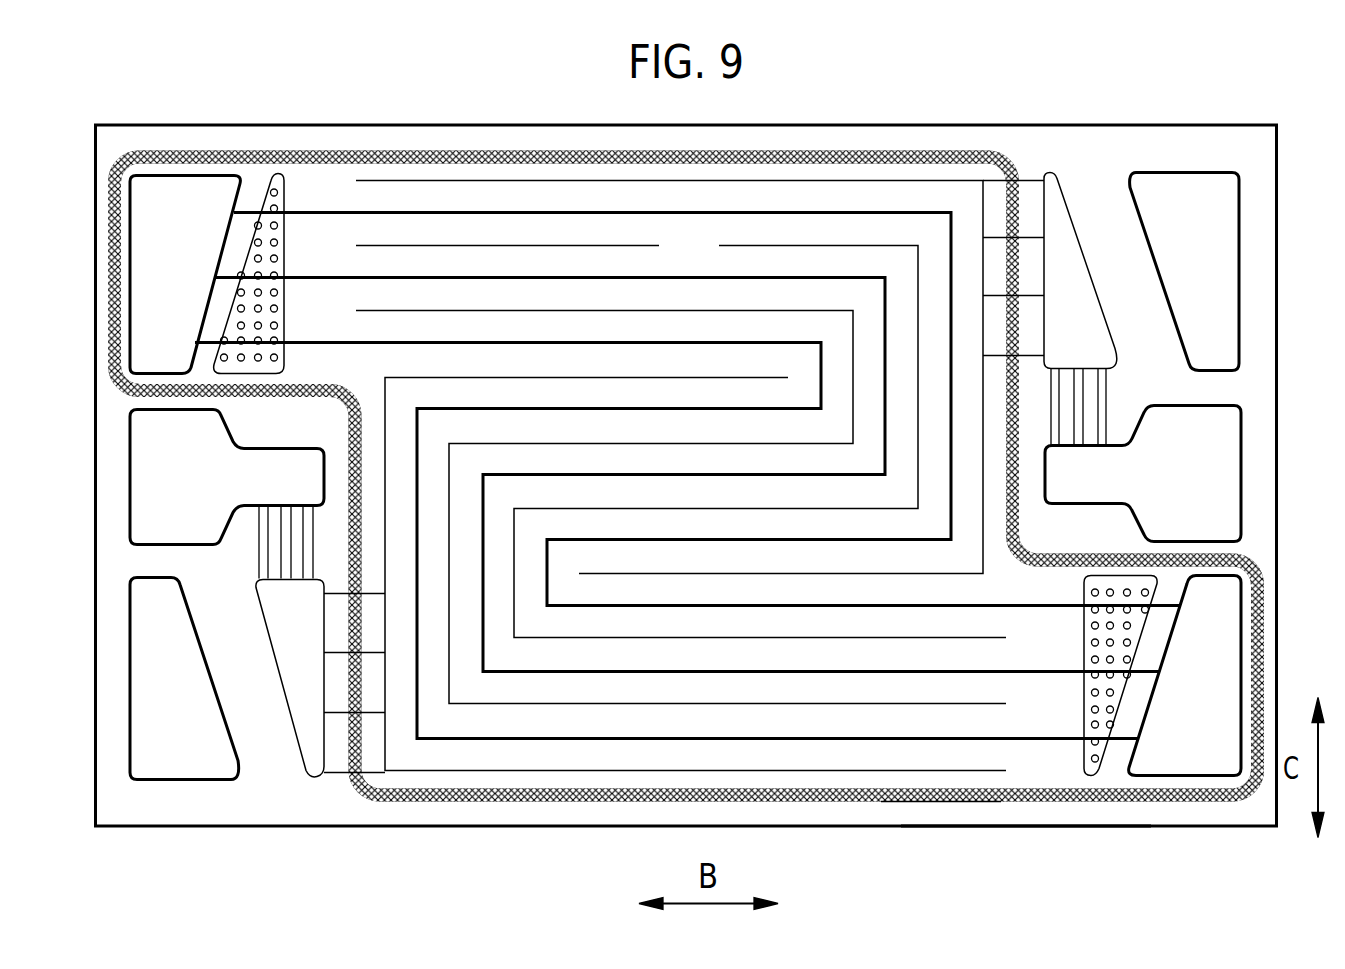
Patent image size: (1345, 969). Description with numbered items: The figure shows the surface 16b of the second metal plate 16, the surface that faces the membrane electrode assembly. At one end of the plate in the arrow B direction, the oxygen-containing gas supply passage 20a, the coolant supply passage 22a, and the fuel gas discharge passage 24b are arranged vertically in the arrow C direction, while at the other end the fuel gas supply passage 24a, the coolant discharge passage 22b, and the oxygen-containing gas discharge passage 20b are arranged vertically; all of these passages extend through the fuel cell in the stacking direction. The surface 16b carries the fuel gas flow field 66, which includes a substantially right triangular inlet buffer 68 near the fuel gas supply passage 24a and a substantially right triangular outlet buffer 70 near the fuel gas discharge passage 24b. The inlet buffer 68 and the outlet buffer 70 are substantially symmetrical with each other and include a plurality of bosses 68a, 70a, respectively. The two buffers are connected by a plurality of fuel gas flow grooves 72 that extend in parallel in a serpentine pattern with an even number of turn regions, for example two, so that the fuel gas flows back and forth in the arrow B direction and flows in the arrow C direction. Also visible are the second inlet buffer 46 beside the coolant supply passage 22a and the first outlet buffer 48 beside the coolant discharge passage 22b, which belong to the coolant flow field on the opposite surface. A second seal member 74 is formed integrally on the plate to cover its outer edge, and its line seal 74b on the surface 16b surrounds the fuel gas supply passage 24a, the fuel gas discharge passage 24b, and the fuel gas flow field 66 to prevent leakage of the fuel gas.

The second metal plate 16 is at (1001, 94).
The surface of the second metal plate 16b is at (1032, 805).
The oxygen-containing gas supply passage 20a is at (1184, 272).
The oxygen-containing gas discharge passage 20b is at (184, 679).
The coolant supply passage 22a is at (1143, 474).
The coolant discharge passage 22b is at (227, 477).
The fuel gas supply passage 24a is at (185, 275).
The fuel gas discharge passage 24b is at (1185, 676).
The second inlet buffer 46 is at (1050, 309).
The first outlet buffer 48 is at (320, 641).
The fuel gas flow field 66 is at (425, 206).
The inlet buffer 68 is at (291, 201).
The bosses 68a is at (281, 275).
The outlet buffer 70 is at (1075, 738).
The bosses 70a is at (1083, 675).
The fuel gas flow grooves 72 is at (685, 214).
The second seal member 74 is at (822, 806).
The line seal 74b is at (930, 802).